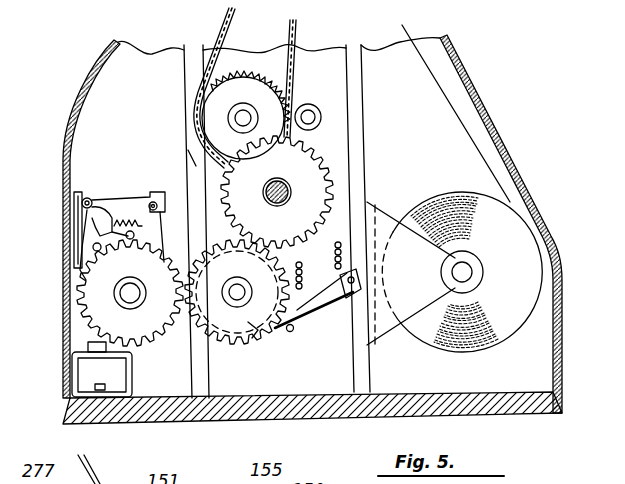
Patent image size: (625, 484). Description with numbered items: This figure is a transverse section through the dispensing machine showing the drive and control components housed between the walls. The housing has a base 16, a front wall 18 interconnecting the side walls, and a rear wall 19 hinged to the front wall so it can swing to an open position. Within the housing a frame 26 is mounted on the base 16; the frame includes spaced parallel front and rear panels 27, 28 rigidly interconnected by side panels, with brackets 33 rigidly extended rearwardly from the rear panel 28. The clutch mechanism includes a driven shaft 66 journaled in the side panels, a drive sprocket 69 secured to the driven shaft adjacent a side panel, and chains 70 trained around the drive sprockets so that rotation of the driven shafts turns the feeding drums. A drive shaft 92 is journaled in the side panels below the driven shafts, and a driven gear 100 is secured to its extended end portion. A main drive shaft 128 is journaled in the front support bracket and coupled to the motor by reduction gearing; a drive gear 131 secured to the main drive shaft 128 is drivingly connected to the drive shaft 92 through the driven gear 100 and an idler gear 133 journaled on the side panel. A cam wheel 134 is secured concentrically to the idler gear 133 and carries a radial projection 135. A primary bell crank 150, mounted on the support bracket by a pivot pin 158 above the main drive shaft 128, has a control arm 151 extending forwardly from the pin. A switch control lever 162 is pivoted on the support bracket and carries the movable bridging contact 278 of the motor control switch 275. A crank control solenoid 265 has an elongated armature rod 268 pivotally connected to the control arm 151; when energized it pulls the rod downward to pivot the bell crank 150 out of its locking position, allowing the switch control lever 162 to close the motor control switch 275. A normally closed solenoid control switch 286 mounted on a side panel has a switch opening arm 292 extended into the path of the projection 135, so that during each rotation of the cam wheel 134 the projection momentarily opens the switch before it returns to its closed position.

The base 16 is at (532, 408).
The front wall 18 is at (78, 112).
The rear wall 19 is at (488, 118).
The frame 26 is at (365, 43).
The front panel 27 is at (194, 162).
The rear panel 28 is at (366, 120).
The brackets 33 is at (392, 325).
The driven shaft 66 is at (308, 117).
The drive sprocket 69 is at (218, 100).
The chains 70 is at (222, 22).
The drive shaft 92 is at (277, 182).
The driven gear 100 is at (318, 187).
The main drive shaft 128 is at (130, 294).
The drive gear 131 is at (96, 293).
The idler gear 133 is at (236, 336).
The cam wheel 134 is at (254, 332).
The radial projection 135 is at (272, 330).
The primary bell crank 150 is at (147, 183).
The control arm 151 is at (120, 200).
The pivot pin 158 is at (160, 205).
The switch control lever 162 is at (112, 221).
The crank control solenoid 265 is at (80, 371).
The armature rod 268 is at (80, 247).
The motor control switch 275 is at (83, 188).
The bridging contact 278 is at (76, 202).
The solenoid control switch 286 is at (352, 278).
The switch opening arm 292 is at (280, 330).